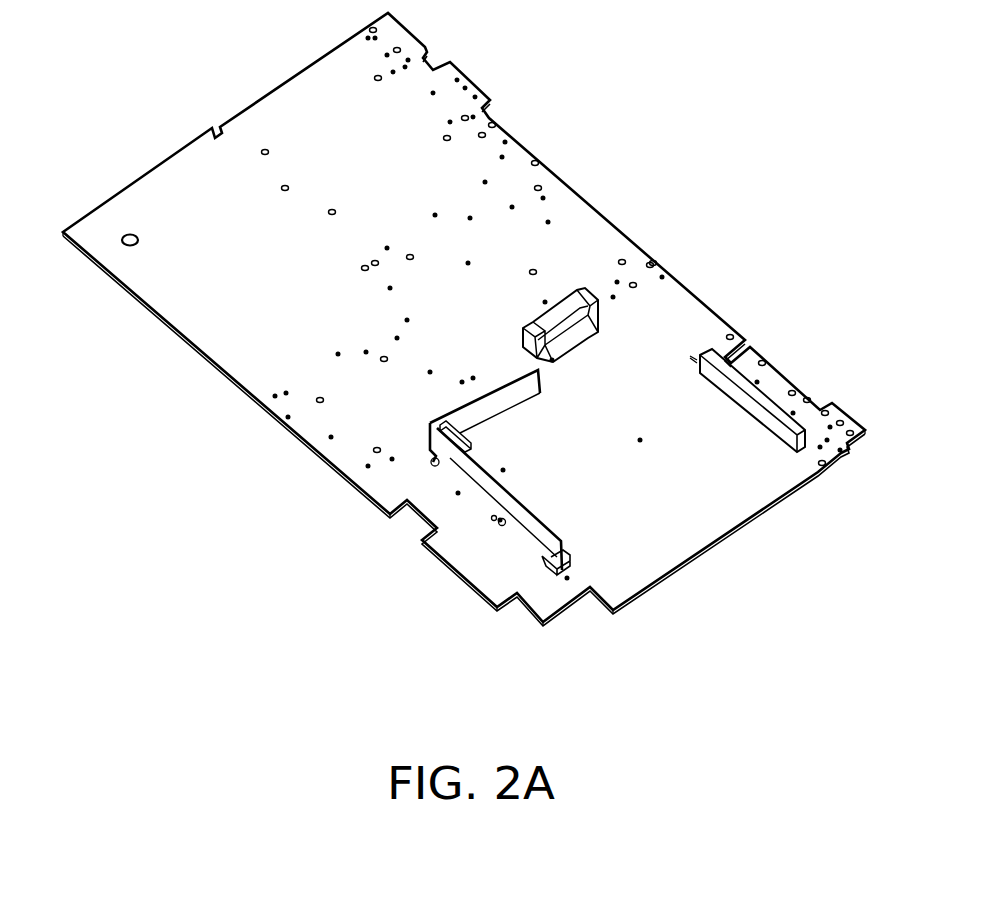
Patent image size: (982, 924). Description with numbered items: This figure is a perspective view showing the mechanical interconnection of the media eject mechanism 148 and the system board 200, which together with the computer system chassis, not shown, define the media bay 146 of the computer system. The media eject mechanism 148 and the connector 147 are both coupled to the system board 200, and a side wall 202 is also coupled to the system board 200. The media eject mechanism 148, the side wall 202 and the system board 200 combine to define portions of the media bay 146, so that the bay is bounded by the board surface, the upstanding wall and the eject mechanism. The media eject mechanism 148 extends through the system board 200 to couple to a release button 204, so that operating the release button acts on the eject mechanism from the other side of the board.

The media bay 146 is at (748, 562).
The system board 200 is at (464, 343).
The connector 147 is at (593, 292).
The media eject mechanism 148 is at (515, 522).
The side wall 202 is at (760, 401).
The release button 204 is at (553, 577).